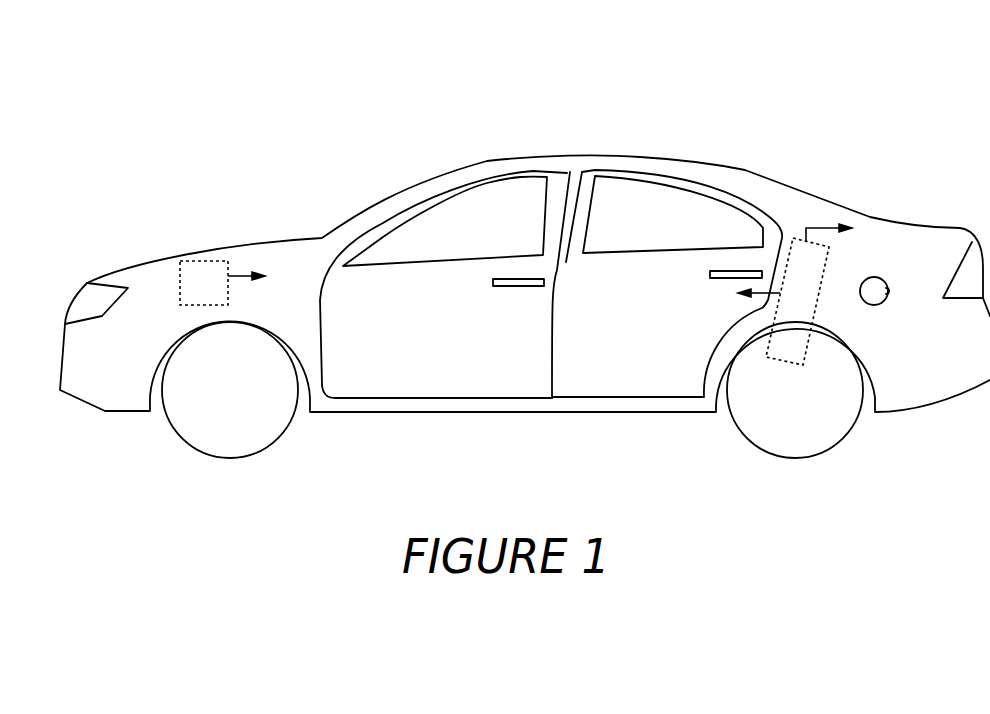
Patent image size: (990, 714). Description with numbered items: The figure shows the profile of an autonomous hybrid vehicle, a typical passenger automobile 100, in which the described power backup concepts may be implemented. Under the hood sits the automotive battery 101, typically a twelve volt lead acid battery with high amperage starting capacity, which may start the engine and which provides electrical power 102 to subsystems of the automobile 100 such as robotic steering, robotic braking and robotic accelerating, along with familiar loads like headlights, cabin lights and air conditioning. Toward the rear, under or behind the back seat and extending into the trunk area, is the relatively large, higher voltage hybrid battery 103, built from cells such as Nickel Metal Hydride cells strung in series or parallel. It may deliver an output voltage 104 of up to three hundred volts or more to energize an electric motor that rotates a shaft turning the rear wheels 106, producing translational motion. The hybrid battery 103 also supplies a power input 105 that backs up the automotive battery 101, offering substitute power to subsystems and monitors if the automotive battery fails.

The passenger automobile 100 is at (728, 137).
The automotive battery 101 is at (197, 259).
The electrical power 102 is at (242, 277).
The hybrid battery 103 is at (822, 279).
The output voltage 104 is at (822, 228).
The power input 105 is at (763, 305).
The rear wheels 106 is at (792, 459).